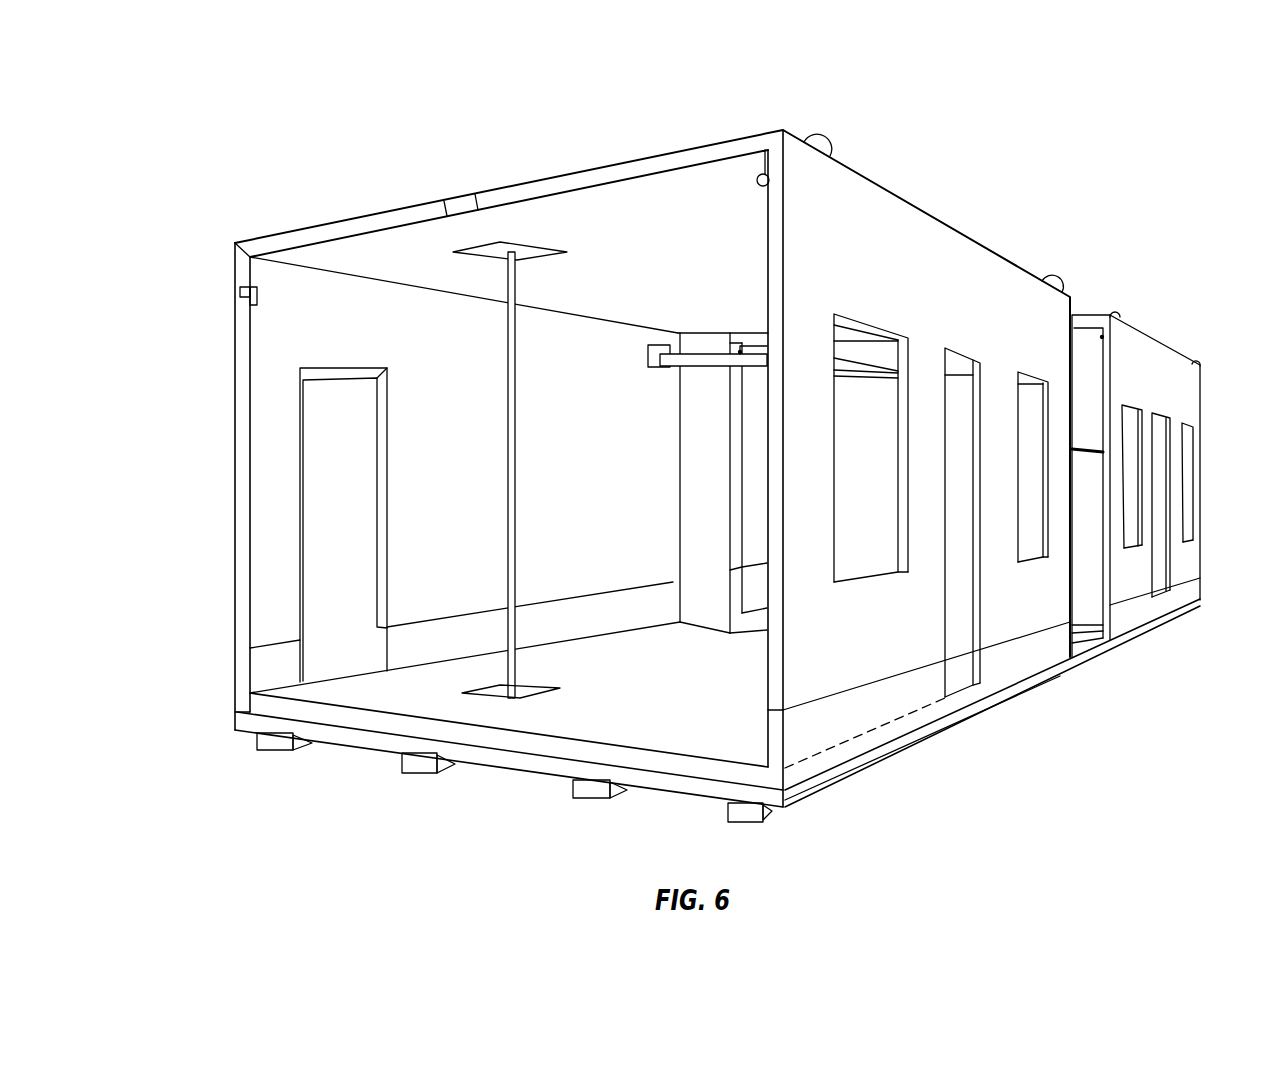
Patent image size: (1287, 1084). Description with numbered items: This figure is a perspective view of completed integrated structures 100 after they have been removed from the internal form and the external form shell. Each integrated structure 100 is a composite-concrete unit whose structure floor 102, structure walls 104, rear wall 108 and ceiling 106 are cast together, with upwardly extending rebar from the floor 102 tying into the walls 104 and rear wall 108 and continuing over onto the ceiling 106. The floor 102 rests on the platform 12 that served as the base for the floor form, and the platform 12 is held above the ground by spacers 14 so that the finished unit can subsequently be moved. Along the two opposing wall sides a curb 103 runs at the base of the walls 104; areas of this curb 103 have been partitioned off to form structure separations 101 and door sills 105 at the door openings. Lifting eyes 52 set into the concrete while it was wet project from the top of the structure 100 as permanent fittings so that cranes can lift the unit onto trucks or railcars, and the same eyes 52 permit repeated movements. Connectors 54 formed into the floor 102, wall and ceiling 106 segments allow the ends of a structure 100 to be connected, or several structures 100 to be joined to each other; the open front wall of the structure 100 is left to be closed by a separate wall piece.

The integrated structure 100 is at (972, 118).
The platform 12 is at (905, 740).
The spacers 14 is at (588, 795).
The lifting eyes 52 is at (825, 141).
The connectors 54 is at (238, 295).
The structure separations 101 is at (1084, 634).
The structure floor 102 is at (565, 752).
The curb 103 is at (553, 595).
The structure walls 104 is at (905, 237).
The door sills 105 is at (972, 697).
The ceiling 106 is at (392, 218).
The rear wall 108 is at (1083, 358).